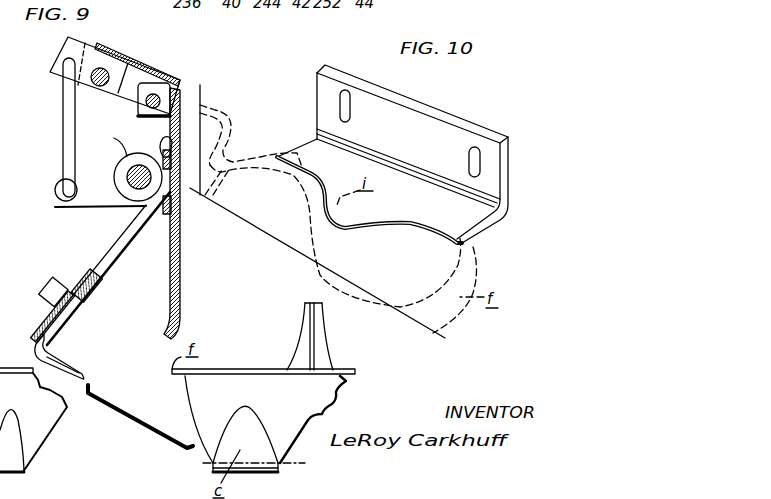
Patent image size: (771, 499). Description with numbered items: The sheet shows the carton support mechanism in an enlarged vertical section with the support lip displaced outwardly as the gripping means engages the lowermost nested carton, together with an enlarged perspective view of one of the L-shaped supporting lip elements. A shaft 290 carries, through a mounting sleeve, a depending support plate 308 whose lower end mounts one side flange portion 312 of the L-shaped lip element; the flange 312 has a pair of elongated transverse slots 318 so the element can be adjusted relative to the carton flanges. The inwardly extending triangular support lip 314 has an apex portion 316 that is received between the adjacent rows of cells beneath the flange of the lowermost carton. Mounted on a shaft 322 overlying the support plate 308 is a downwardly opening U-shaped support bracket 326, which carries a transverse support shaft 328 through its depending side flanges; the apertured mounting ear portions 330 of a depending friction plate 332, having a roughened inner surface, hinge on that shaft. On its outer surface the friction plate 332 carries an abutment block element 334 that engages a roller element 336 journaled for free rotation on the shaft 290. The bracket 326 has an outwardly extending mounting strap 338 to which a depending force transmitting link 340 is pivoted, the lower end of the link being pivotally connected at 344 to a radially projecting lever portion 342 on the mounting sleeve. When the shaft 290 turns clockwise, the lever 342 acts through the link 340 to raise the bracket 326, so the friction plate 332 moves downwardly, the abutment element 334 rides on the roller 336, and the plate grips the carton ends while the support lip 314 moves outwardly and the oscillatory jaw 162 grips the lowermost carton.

In FIG. 9, the shaft 290 is at (127, 173).
In FIG. 9, the support plate 308 is at (124, 249).
In FIG. 10, the side flange portion 312 is at (506, 169).
In FIG. 9, the support lip 314 is at (62, 358).
In FIG. 10, the support lip 314 is at (483, 225).
In FIG. 10, the apex portion 316 is at (323, 212).
In FIG. 10, the elongated transverse slots 318 is at (348, 97).
In FIG. 9, the shaft 322 is at (93, 82).
In FIG. 9, the U-shaped support bracket 326 is at (119, 57).
In FIG. 9, the transverse support shaft 328 is at (164, 87).
In FIG. 9, the mounting ear portions 330 is at (153, 95).
In FIG. 9, the friction plate 332 is at (182, 278).
In FIG. 9, the abutment block element 334 is at (160, 152).
In FIG. 9, the roller element 336 is at (104, 140).
In FIG. 9, the mounting strap 338 is at (58, 59).
In FIG. 9, the force transmitting link 340 is at (63, 128).
In FIG. 9, the lever portion 342 is at (98, 198).
In FIG. 9, the pivotal connection 344 is at (64, 202).
In FIG. 9, the oscillatory jaw 162 is at (203, 478).